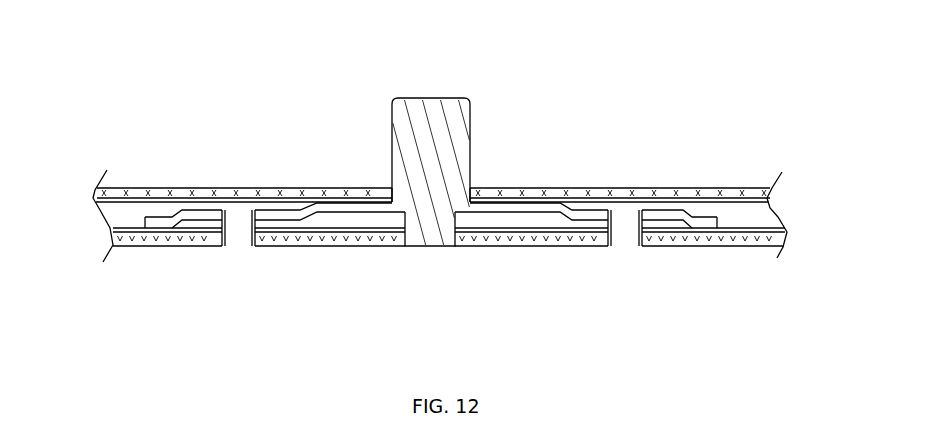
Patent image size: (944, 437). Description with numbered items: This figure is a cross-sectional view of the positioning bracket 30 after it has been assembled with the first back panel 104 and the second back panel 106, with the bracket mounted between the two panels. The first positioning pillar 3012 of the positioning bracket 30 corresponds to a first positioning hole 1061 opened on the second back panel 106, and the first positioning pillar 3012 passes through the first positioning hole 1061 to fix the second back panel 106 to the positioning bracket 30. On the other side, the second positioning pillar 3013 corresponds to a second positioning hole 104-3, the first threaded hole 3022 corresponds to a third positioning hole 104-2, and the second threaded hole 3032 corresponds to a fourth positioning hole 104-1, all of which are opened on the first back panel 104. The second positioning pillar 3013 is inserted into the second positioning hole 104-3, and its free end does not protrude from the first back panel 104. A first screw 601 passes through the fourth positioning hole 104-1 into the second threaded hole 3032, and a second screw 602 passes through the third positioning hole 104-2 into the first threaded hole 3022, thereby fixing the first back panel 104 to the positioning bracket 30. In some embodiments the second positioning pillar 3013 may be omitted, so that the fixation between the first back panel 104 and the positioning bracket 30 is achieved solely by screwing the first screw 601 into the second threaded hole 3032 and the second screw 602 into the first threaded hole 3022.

The positioning bracket 30 is at (431, 190).
The first positioning pillar 3012 is at (445, 146).
The second positioning pillar 3013 is at (421, 230).
The first threaded hole 3022 is at (222, 210).
The second threaded hole 3032 is at (610, 210).
The first back panel 104 is at (449, 277).
The fourth positioning hole 104-1 is at (608, 238).
The third positioning hole 104-2 is at (219, 246).
The second positioning hole 104-3 is at (455, 246).
The second back panel 106 is at (670, 194).
The first positioning hole 1061 is at (468, 191).
The first screw 601 is at (635, 233).
The second screw 602 is at (233, 220).